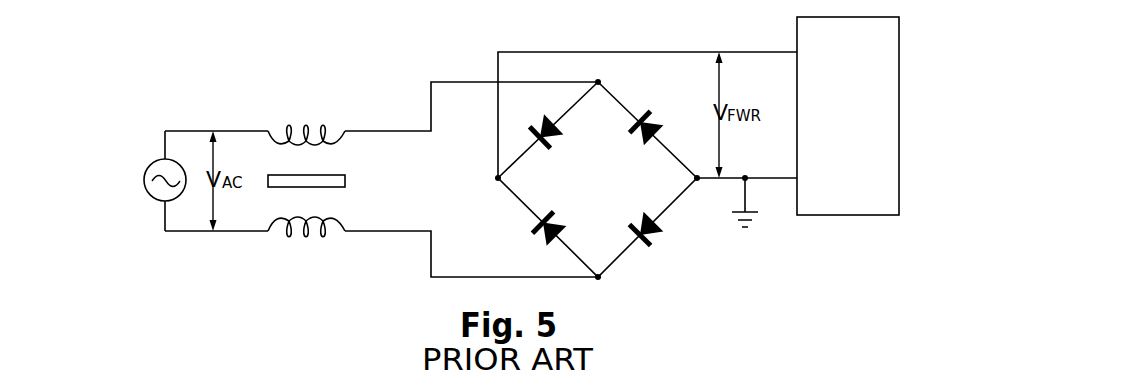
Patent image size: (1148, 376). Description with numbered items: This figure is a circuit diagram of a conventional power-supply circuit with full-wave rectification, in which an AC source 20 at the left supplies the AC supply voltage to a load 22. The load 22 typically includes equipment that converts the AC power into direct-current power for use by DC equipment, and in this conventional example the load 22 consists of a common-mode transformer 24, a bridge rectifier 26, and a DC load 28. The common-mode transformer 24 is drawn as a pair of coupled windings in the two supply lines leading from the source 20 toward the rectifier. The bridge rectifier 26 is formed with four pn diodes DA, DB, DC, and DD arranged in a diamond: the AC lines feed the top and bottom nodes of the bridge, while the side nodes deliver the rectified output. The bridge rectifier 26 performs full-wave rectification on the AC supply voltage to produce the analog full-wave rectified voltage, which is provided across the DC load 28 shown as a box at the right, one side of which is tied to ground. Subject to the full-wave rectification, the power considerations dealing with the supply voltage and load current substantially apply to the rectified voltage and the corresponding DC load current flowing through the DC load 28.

The AC voltage source 20 is at (157, 202).
The load 22 is at (465, 187).
The common-mode transformer 24 is at (327, 236).
The bridge rectifier 26 is at (601, 179).
The DC load 28 is at (797, 32).
The pn diode DA is at (553, 138).
The pn diode DB is at (540, 238).
The pn diode DC is at (658, 118).
The pn diode DD is at (657, 227).